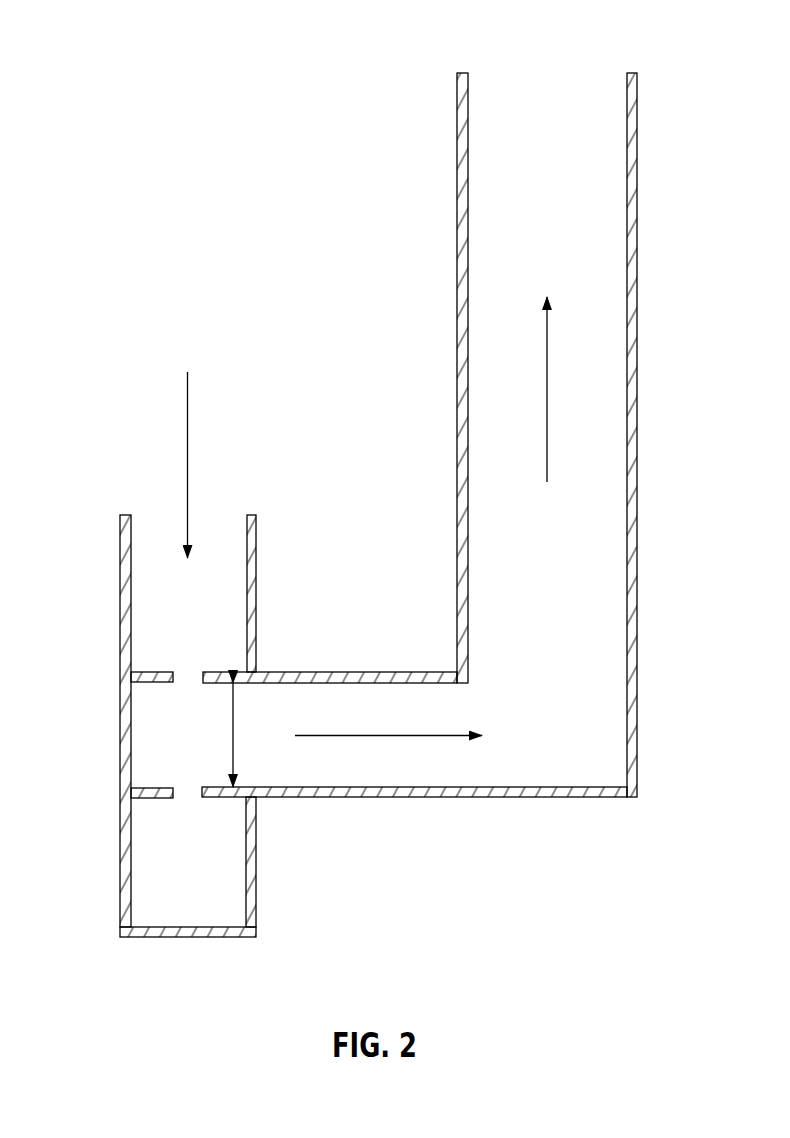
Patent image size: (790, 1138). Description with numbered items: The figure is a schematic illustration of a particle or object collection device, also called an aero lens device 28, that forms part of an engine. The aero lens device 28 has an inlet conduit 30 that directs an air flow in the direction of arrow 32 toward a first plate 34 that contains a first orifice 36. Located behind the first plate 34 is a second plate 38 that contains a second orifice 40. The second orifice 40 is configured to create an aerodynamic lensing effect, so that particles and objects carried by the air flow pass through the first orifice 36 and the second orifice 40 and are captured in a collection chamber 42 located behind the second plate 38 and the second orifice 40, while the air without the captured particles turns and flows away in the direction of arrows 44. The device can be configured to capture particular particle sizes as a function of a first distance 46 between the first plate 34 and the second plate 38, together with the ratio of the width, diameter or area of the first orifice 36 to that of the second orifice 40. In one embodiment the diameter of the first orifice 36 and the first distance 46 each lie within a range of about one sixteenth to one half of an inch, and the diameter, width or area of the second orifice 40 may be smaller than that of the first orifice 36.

The aero lens device 28 is at (633, 42).
The inlet conduit 30 is at (120, 517).
The arrow 32 is at (187, 449).
The first plate 34 is at (150, 672).
The first orifice 36 is at (188, 677).
The second plate 38 is at (146, 798).
The second orifice 40 is at (186, 792).
The collection chamber 42 is at (147, 938).
The arrows 44 is at (547, 413).
The first distance 46 is at (233, 753).